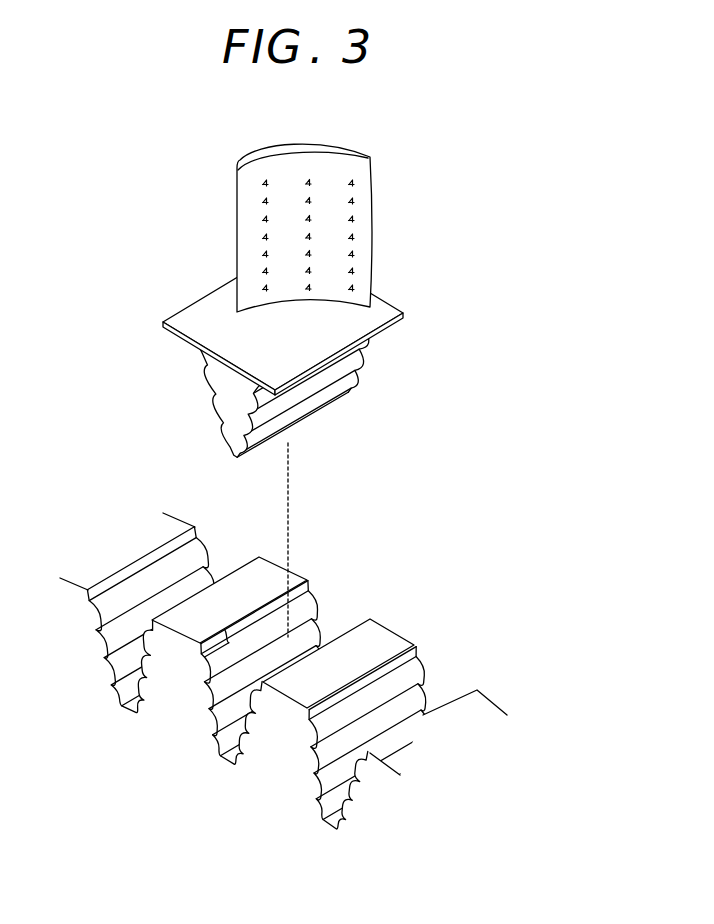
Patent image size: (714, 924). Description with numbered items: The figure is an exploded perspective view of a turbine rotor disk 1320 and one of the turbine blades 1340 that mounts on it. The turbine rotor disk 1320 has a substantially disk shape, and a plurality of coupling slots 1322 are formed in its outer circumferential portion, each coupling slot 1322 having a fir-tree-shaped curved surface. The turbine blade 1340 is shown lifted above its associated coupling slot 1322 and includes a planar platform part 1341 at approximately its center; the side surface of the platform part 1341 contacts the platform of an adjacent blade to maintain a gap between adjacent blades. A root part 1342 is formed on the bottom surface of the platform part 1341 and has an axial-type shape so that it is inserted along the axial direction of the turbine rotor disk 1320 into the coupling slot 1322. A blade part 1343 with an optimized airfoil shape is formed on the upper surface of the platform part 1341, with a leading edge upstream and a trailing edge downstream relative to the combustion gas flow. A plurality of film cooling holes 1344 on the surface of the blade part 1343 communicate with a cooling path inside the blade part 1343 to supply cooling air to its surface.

The turbine rotor disk 1320 is at (290, 637).
The coupling slot 1322 is at (152, 596).
The turbine blade 1340 is at (294, 277).
The platform part 1341 is at (190, 320).
The root part 1342 is at (220, 377).
The blade part 1343 is at (245, 215).
The film cooling hole 1344 is at (265, 181).